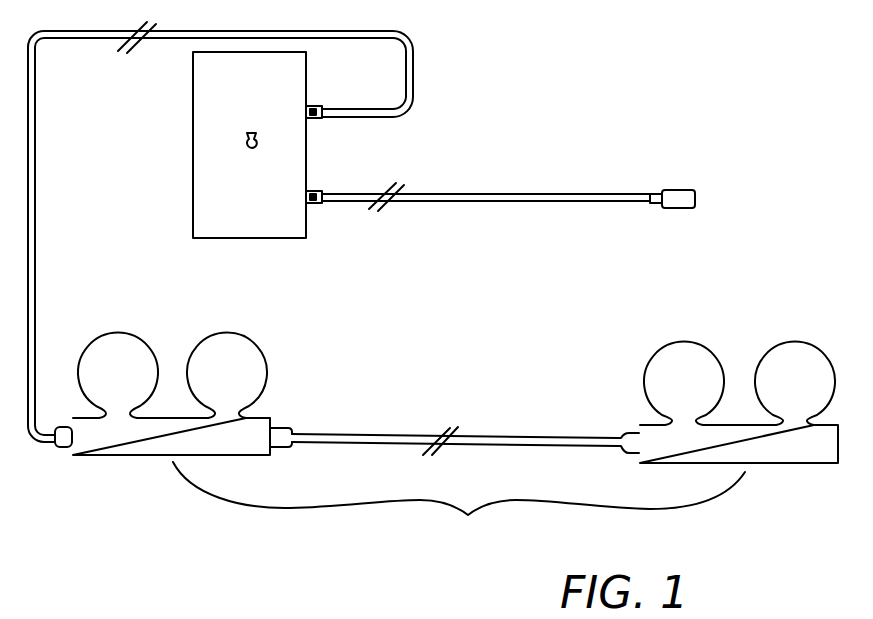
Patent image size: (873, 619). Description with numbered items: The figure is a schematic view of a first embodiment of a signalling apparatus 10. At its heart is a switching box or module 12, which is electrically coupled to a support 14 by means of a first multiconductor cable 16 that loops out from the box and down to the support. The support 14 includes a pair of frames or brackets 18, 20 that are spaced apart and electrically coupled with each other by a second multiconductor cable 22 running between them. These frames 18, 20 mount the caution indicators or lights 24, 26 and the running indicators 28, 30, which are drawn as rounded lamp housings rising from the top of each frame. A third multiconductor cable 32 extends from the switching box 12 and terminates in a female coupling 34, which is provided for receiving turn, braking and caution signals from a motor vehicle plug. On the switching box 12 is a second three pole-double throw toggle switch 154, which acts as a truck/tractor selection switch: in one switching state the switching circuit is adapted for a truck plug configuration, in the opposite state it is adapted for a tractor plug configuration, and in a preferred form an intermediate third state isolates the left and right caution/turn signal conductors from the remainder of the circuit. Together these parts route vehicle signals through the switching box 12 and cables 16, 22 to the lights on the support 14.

The signalling apparatus 10 is at (465, 150).
The switching box 12 is at (205, 195).
The second three pole-double throw toggle switch 154 is at (246, 145).
The first multiconductor cable 16 is at (33, 245).
The third multiconductor cable 32 is at (558, 193).
The female coupling 34 is at (680, 192).
The frame 18 is at (125, 440).
The frame 20 is at (794, 448).
The second multiconductor cable 22 is at (410, 437).
The caution indicator 24 is at (793, 366).
The caution indicator 26 is at (128, 352).
The running indicator 28 is at (687, 360).
The running indicator 30 is at (233, 355).
The support 14 is at (459, 506).